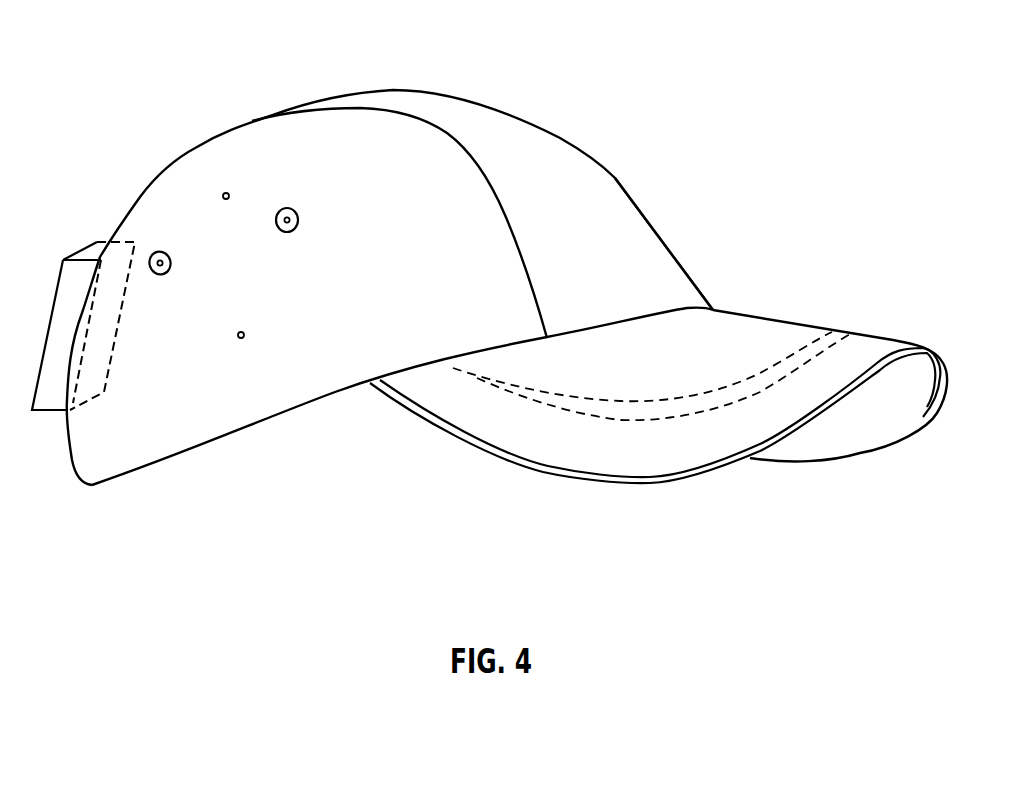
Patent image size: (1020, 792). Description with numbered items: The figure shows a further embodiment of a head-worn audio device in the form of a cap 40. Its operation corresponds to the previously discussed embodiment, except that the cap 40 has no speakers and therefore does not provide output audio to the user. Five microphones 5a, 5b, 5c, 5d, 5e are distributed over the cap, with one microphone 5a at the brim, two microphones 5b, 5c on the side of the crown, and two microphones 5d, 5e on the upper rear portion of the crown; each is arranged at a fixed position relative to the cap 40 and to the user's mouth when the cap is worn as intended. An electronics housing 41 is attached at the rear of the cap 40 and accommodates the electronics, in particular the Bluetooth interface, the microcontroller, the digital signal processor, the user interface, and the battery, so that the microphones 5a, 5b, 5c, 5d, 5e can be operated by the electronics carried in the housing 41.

The cap 40 is at (750, 66).
The electronics housing 41 is at (82, 250).
The microphone 5a is at (544, 480).
The microphone 5b is at (225, 193).
The microphone 5c is at (242, 338).
The microphone 5d is at (659, 204).
The microphone 5e is at (580, 140).